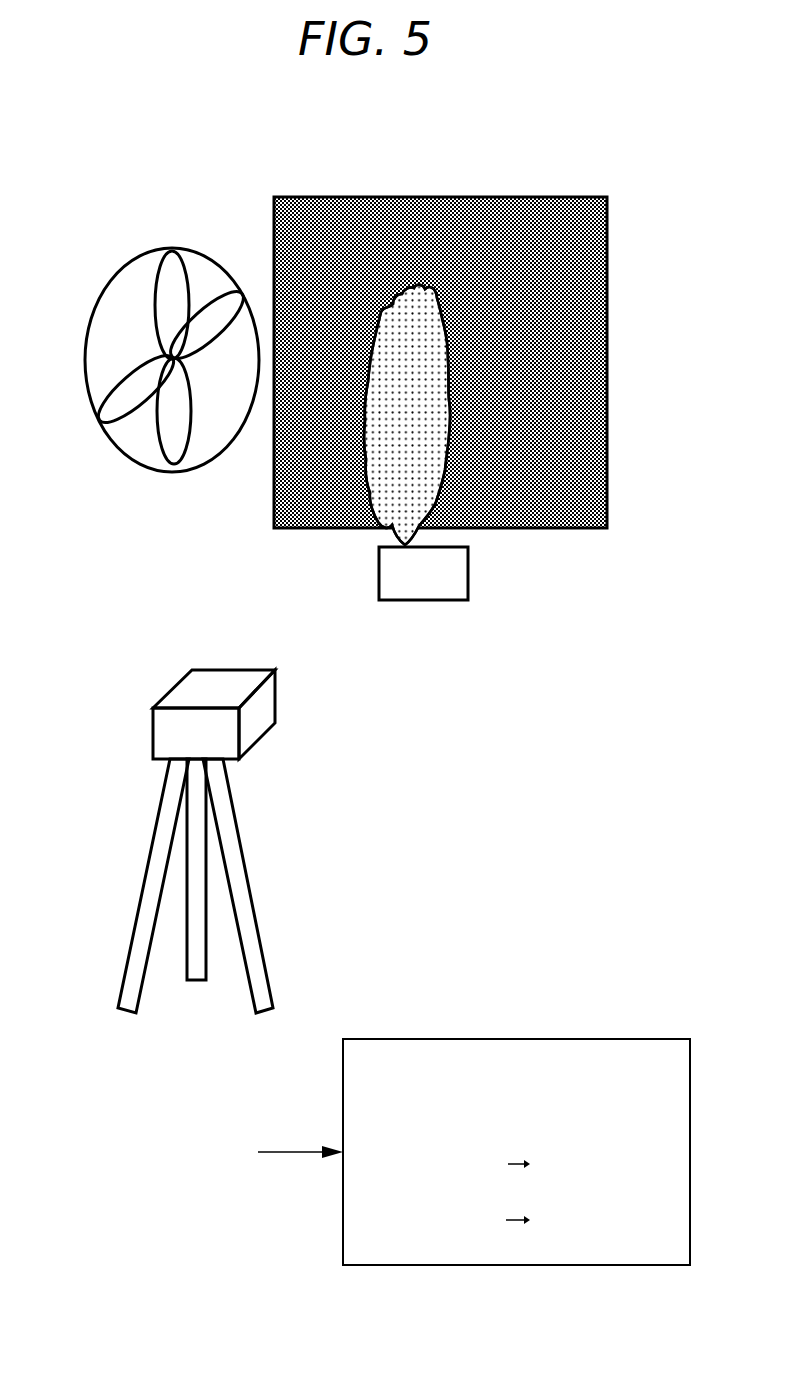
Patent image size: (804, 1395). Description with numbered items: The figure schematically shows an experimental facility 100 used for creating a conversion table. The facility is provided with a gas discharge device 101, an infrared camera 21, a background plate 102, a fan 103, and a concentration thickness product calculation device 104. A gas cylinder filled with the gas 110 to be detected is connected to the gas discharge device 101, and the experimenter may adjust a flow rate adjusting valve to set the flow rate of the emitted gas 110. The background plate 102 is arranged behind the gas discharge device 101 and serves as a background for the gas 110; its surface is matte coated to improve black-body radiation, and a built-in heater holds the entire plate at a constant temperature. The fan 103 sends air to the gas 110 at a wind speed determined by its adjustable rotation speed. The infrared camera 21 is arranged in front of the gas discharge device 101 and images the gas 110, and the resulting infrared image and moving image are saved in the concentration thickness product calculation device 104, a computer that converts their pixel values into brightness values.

The experimental facility 100 is at (384, 111).
The gas discharge device 101 is at (468, 572).
The background plate 102 is at (512, 197).
The fan 103 is at (108, 282).
The concentration thickness product calculation device 104 is at (527, 1039).
The gas 110 is at (448, 355).
The infrared camera 21 is at (276, 695).